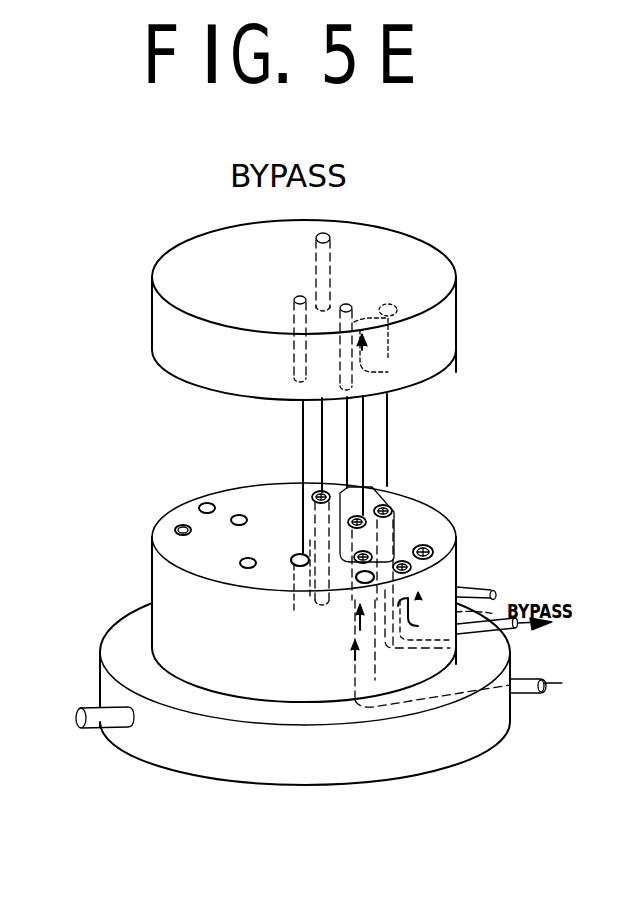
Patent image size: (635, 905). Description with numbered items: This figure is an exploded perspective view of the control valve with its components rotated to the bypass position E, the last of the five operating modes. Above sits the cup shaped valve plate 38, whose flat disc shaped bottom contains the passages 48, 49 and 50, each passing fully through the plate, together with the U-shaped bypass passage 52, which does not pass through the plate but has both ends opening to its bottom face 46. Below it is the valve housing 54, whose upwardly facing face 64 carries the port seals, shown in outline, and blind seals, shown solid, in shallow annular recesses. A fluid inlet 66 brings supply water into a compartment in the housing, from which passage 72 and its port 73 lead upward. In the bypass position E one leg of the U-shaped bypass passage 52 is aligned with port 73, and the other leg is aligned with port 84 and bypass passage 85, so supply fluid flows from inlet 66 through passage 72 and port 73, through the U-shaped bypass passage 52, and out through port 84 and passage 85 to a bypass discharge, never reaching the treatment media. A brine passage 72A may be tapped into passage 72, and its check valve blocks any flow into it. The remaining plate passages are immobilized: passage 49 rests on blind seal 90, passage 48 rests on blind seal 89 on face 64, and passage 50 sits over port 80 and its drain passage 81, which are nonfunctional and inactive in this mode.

The valve plate 38 is at (353, 321).
The bottom face 46 is at (456, 372).
The passage 48 is at (357, 363).
The passage 49 is at (293, 352).
The passage 50 is at (312, 256).
The U-shaped bypass passage 52 is at (379, 308).
The valve housing 54 is at (145, 572).
The upwardly facing face 64 is at (447, 514).
The fluid inlet 66 is at (528, 694).
The passage 72 is at (345, 622).
The brine passage 72A is at (498, 592).
The port 73 is at (360, 516).
The port 80 is at (314, 490).
The drain passage 81 is at (313, 527).
The port 84 is at (425, 520).
The bypass passage 85 is at (388, 530).
The blind seal 89 is at (375, 575).
The blind seal 90 is at (302, 566).
The bypass position E is at (456, 300).